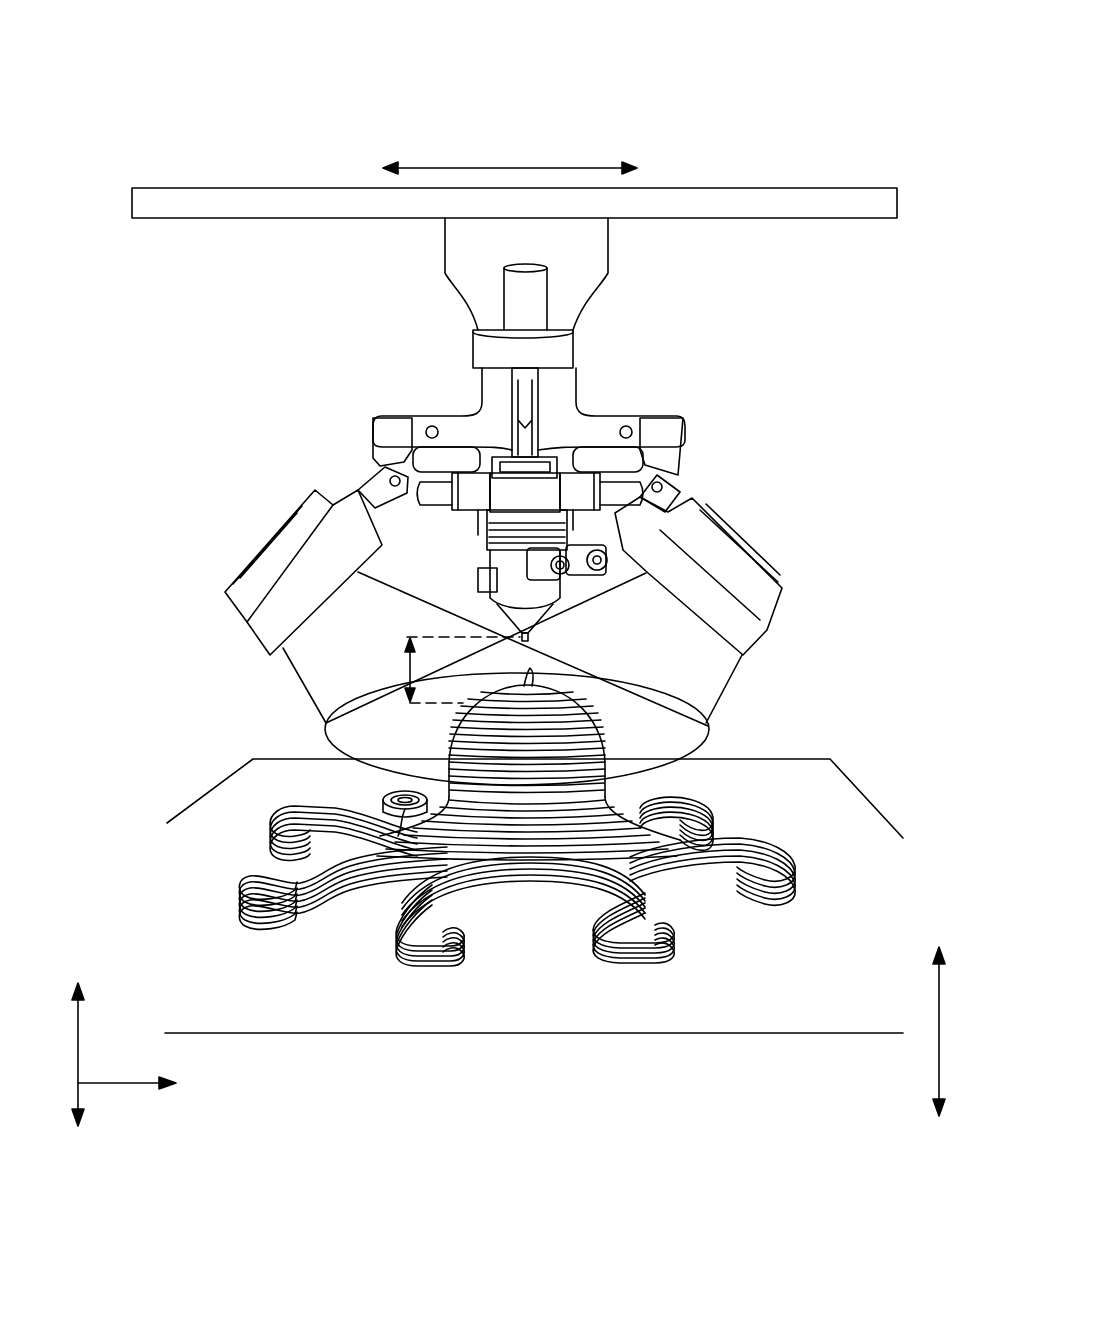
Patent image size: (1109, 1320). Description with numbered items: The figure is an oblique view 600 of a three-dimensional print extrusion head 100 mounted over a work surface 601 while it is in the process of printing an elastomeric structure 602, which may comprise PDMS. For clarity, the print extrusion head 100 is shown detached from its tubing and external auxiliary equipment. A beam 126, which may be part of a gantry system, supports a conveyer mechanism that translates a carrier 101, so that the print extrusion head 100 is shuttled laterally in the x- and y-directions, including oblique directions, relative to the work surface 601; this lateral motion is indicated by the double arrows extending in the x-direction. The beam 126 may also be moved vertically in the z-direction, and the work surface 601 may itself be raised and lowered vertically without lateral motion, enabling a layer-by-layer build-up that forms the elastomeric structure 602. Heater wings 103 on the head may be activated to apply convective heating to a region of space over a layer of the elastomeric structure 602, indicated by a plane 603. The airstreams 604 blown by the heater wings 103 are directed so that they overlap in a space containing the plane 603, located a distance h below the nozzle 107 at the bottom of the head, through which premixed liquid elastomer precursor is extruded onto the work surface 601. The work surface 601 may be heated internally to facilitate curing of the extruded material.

The oblique view 600 is at (836, 80).
The 3D print extrusion head 100 is at (720, 388).
The carrier 101 is at (609, 259).
The heater wings 103 is at (212, 620).
The nozzle 107 is at (545, 629).
The beam 126 is at (190, 188).
The work surface 601 is at (870, 800).
The elastomeric structure 602 is at (449, 742).
The plane 603 is at (672, 730).
The airstreams 604 is at (311, 694).